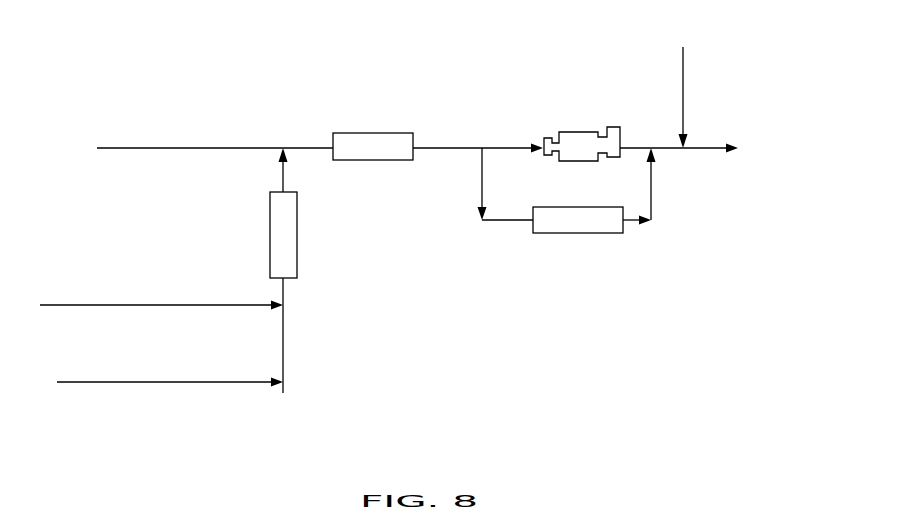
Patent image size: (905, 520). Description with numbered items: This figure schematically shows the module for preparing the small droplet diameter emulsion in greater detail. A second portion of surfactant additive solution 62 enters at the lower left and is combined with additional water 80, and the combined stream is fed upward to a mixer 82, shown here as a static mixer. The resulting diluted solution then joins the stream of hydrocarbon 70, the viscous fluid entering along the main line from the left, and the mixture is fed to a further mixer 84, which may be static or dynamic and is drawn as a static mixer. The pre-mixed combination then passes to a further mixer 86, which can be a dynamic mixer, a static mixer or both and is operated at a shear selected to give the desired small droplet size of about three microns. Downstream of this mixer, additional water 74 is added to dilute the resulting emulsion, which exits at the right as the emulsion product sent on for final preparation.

The hydrocarbon 70 is at (206, 148).
The mixer 82 is at (270, 244).
The additional water 80 is at (158, 305).
The second portion of surfactant additive solution 62 is at (157, 382).
The further mixer 84 is at (378, 133).
The further mixer 86 is at (623, 182).
The additional water 74 is at (683, 104).